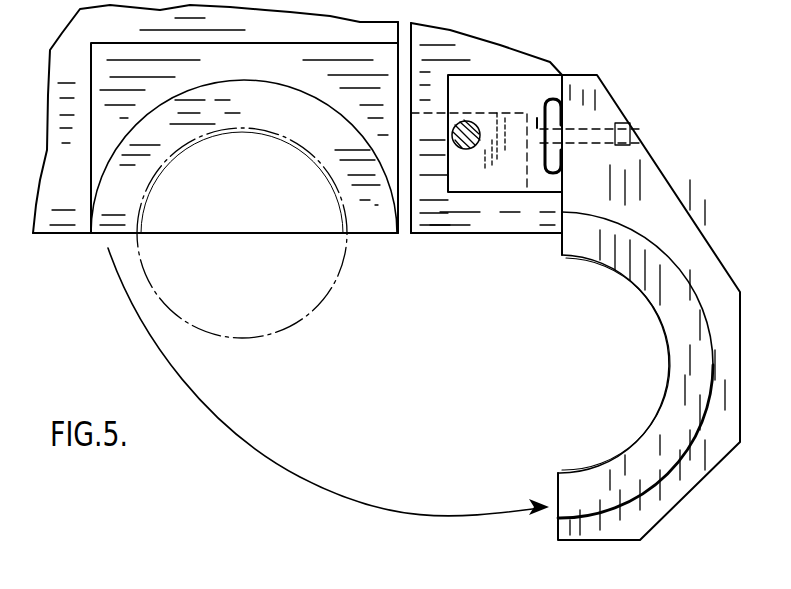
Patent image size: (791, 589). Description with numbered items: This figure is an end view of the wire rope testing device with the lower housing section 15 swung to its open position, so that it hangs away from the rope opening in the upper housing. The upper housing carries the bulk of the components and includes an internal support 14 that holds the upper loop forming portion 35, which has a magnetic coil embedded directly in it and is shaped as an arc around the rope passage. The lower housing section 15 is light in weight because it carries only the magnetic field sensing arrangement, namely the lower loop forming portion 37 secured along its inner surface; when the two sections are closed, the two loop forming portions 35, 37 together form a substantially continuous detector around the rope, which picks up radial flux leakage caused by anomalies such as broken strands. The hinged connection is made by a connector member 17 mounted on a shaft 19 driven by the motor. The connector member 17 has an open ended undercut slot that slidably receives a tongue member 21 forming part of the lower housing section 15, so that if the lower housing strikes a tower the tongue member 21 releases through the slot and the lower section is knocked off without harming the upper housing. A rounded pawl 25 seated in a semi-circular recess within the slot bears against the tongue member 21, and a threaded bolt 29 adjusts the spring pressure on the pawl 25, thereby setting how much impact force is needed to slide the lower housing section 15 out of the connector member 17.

The internal support 14 is at (107, 128).
The lower housing section 15 is at (680, 222).
The connector member 17 is at (477, 180).
The shaft 19 is at (472, 122).
The tongue member 21 is at (552, 165).
The rounded pawl 25 is at (538, 118).
The threaded bolt 29 is at (628, 128).
The loop forming portion 35 is at (370, 220).
The loop forming portion 37 is at (672, 372).